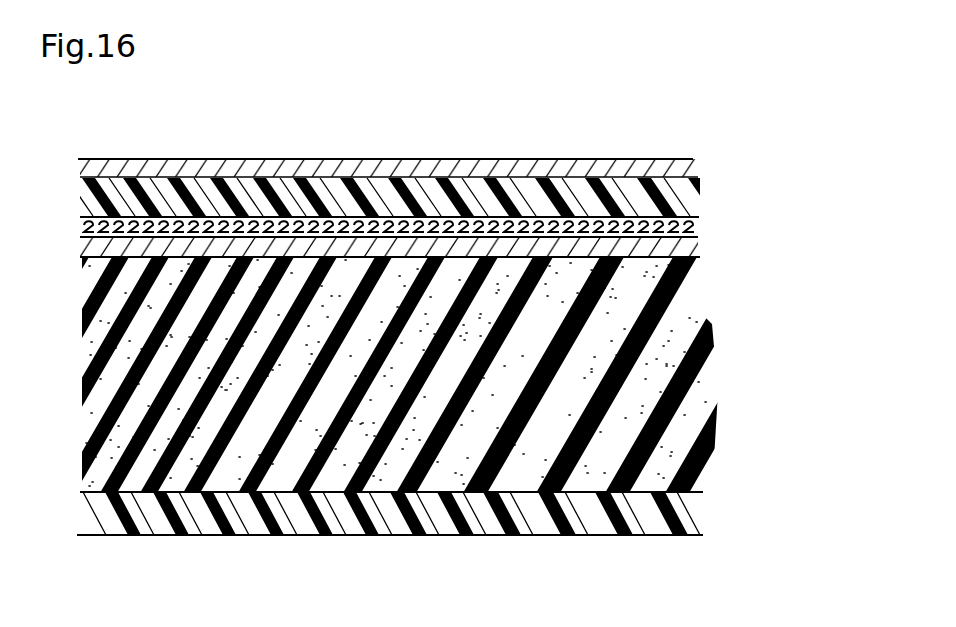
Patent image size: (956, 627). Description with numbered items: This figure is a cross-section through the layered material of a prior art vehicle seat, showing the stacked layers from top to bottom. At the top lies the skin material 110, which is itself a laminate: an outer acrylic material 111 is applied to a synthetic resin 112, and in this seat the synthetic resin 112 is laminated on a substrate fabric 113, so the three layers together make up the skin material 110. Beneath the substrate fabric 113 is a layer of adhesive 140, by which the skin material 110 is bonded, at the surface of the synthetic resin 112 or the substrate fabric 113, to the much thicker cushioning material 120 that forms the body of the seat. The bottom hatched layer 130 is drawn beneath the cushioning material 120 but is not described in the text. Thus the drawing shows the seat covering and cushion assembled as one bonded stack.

The skin material 110 is at (456, 194).
The acrylic material 111 is at (695, 166).
The synthetic resin 112 is at (692, 195).
The substrate fabric 113 is at (692, 232).
The adhesive 140 is at (690, 248).
The cushioning material 120 is at (668, 368).
The base member 130 is at (688, 512).